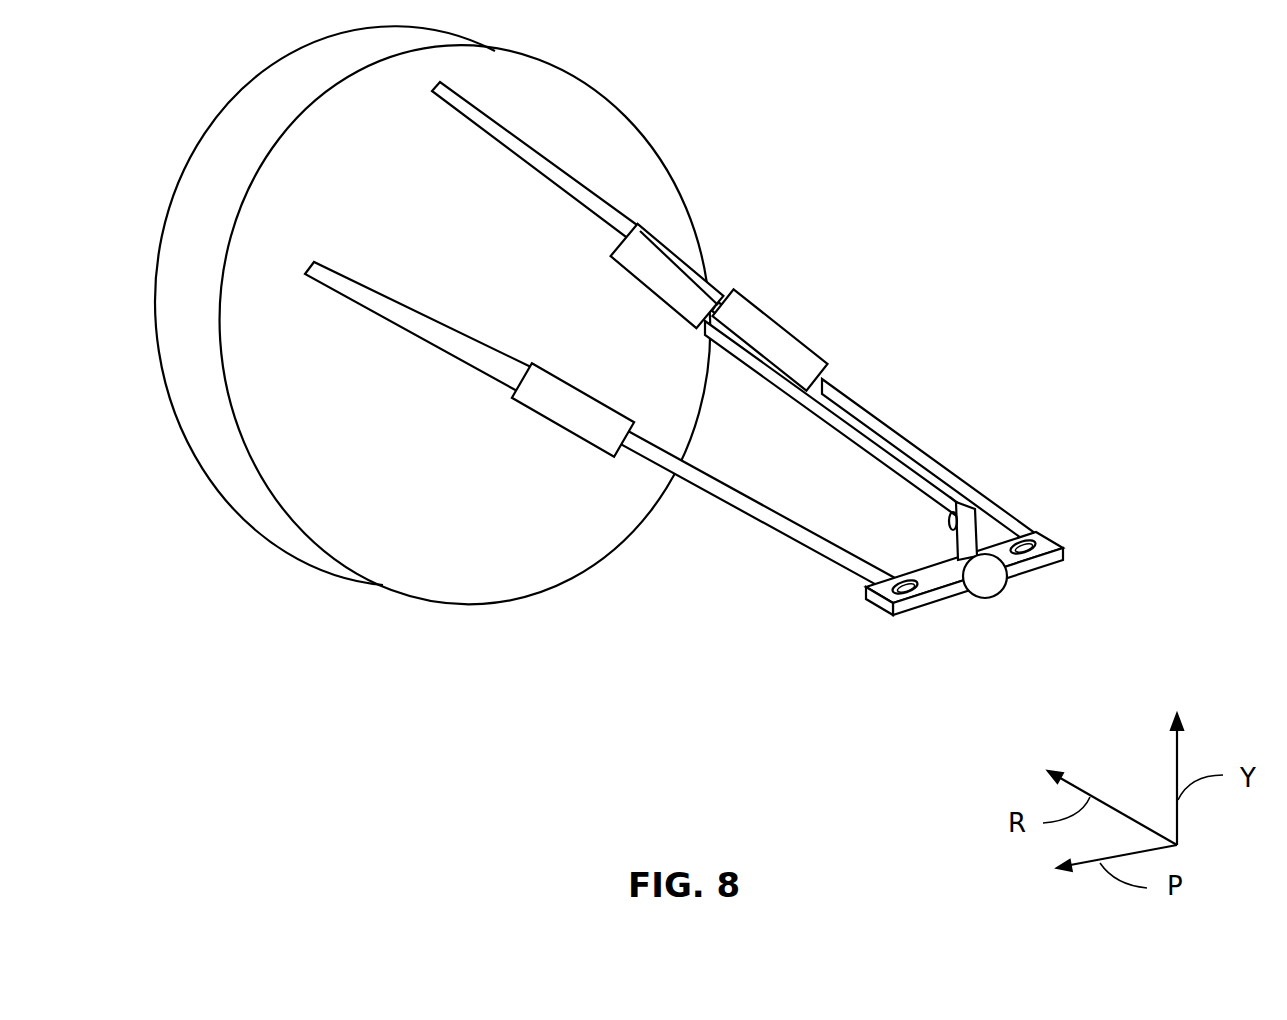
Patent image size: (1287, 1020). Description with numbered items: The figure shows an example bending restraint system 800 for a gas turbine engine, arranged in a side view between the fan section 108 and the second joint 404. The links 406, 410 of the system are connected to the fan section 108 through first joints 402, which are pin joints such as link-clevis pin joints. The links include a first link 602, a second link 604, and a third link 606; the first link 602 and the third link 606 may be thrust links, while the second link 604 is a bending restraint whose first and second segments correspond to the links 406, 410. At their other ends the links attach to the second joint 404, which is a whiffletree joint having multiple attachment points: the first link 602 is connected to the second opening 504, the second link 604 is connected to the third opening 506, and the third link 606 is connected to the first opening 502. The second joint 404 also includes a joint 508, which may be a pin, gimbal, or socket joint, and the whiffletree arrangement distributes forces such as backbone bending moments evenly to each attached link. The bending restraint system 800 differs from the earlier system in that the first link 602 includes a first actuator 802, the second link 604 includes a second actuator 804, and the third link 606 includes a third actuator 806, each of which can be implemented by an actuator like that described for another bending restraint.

The fan section 108 is at (172, 200).
The first joint 402 is at (437, 95).
The first link 602 is at (773, 527).
The second link 604 is at (841, 433).
The third link 606 is at (828, 370).
The third actuator 806 is at (660, 303).
The second actuator 804 is at (777, 320).
The first actuator 802 is at (550, 420).
The second joint 404 is at (996, 553).
The second opening 504 is at (887, 598).
The first opening 502 is at (1033, 557).
The third opening 506 is at (956, 538).
The joint 508 is at (985, 598).
The bending restraint system 800 is at (996, 88).
The link 406 is at (818, 240).
The link 410 is at (890, 239).